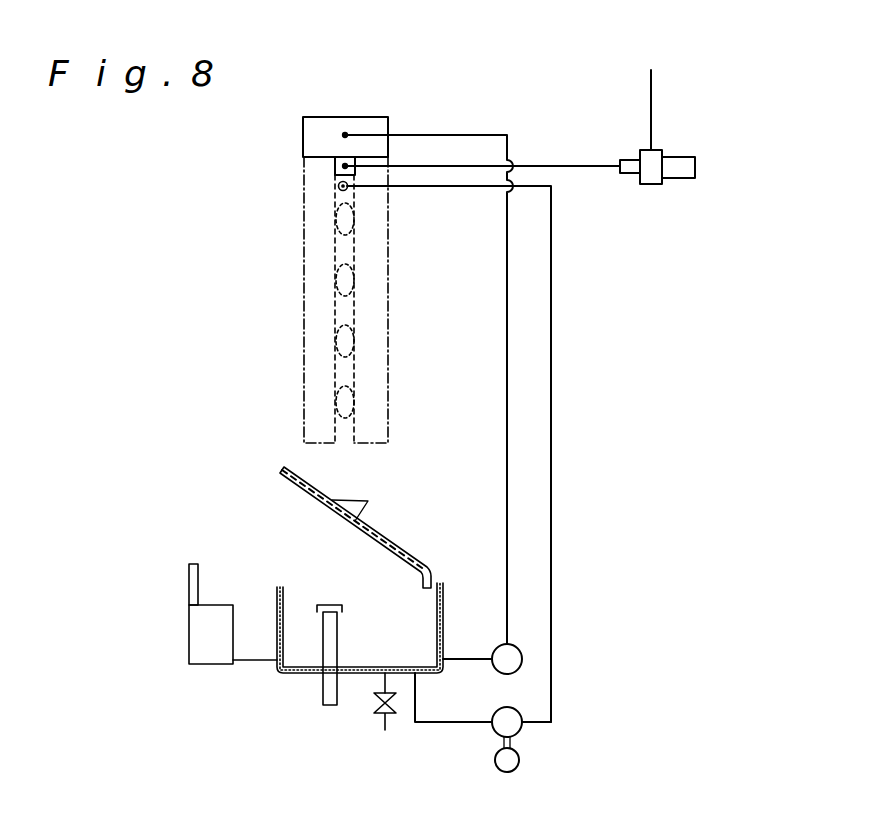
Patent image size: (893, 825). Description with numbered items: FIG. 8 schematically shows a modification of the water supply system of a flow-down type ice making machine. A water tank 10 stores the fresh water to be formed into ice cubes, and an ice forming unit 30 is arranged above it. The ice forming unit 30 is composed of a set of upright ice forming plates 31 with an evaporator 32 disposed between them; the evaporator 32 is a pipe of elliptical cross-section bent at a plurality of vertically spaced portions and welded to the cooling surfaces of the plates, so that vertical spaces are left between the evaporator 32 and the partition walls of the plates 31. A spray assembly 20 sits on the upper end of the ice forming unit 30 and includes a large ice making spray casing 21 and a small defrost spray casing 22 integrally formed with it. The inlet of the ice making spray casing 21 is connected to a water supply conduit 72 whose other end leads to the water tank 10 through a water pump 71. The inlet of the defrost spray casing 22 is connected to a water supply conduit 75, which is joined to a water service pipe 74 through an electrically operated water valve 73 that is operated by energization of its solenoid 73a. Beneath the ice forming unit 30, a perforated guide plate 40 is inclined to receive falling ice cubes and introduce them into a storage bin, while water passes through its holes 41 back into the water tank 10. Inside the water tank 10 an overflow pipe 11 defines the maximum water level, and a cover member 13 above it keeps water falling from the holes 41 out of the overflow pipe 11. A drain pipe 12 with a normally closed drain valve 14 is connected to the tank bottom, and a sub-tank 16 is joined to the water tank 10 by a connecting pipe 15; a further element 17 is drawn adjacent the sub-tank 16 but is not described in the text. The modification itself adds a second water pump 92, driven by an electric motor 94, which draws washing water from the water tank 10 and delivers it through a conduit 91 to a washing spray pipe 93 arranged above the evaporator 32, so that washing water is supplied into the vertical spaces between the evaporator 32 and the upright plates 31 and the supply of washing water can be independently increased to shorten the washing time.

The water tank 10 is at (443, 594).
The overflow pipe 11 is at (337, 648).
The drain pipe 12 is at (382, 682).
The cover member 13 is at (328, 604).
The drain valve 14 is at (376, 710).
The connecting pipe 15 is at (252, 661).
The sub-tank 16 is at (189, 647).
The pipe 17 is at (189, 585).
The spray assembly 20 is at (300, 124).
The ice making spray casing 21 is at (356, 128).
The defrost spray casing 22 is at (335, 162).
The ice forming unit 30 is at (388, 286).
The ice forming plates 31 is at (333, 313).
The evaporator 32 is at (336, 345).
The guide plate 40 is at (286, 476).
The holes 41 is at (364, 498).
The water pump 71 is at (497, 655).
The water supply conduit 72 is at (450, 135).
The water valve 73 is at (651, 184).
The solenoid 73a is at (695, 167).
The water service pipe 74 is at (651, 120).
The water supply conduit 75 is at (568, 166).
The conduit 91 is at (551, 398).
The water pump 92 is at (500, 728).
The washing spray pipe 93 is at (338, 186).
The electric motor 94 is at (514, 760).